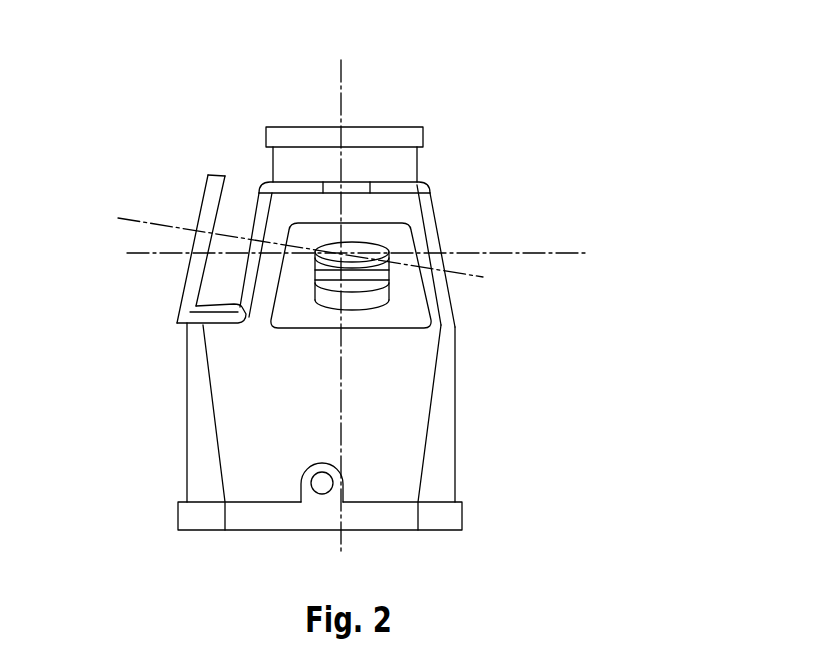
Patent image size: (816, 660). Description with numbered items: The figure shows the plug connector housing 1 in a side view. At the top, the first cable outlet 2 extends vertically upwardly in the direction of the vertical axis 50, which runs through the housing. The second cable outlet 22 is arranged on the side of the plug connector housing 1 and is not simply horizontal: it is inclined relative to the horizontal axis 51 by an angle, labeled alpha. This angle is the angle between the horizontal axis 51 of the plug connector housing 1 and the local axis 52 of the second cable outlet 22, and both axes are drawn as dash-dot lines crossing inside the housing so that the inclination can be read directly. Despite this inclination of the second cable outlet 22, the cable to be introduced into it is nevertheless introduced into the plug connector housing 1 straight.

The plug connector housing 1 is at (503, 441).
The first cable outlet 2 is at (398, 165).
The second cable outlet 22 is at (218, 283).
The vertical axis 50 is at (345, 71).
The horizontal axis 51 is at (520, 254).
The local axis 52 is at (138, 221).